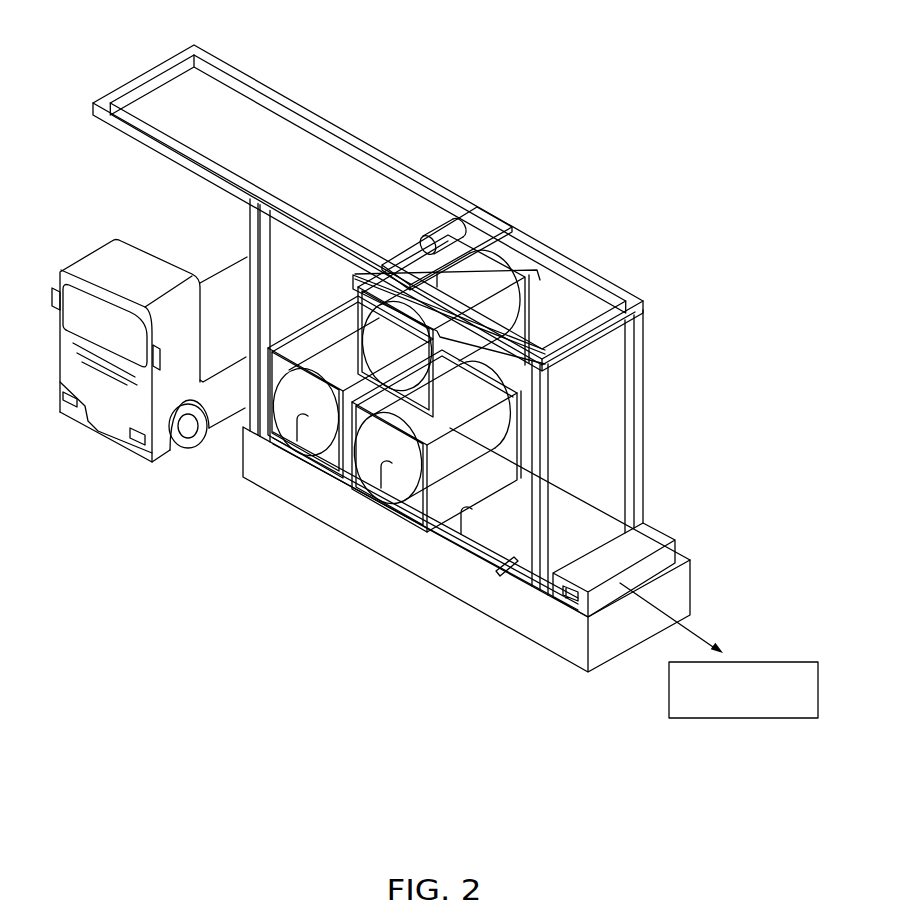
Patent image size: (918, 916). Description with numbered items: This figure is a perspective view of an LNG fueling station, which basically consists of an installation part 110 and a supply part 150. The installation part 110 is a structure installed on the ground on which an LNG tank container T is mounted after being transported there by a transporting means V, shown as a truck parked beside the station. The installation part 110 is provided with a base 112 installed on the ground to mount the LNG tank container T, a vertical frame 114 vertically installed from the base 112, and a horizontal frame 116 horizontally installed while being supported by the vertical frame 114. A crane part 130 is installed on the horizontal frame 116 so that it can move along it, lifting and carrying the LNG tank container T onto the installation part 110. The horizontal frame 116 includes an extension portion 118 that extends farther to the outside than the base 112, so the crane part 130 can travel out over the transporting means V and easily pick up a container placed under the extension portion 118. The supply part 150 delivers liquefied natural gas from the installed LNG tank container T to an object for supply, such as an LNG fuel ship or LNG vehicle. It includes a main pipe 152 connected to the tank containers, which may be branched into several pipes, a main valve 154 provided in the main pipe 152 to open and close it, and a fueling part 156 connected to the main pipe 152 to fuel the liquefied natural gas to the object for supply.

The installation part 110 is at (455, 386).
The base 112 is at (290, 487).
The vertical frame 114 is at (253, 412).
The horizontal frame 116 is at (368, 308).
The extension portion 118 is at (147, 133).
The crane part 130 is at (485, 218).
The supply part 150 is at (425, 591).
The main pipe 152 is at (453, 536).
The main valve 154 is at (508, 578).
The fueling part 156 is at (551, 647).
The LNG tank container T is at (403, 483).
The transporting means V is at (107, 418).